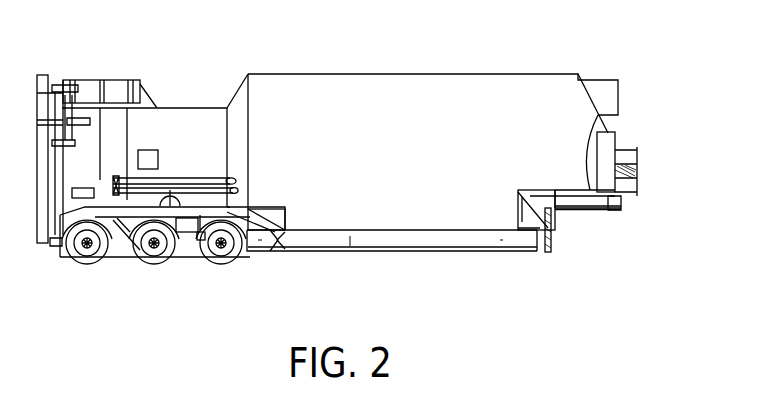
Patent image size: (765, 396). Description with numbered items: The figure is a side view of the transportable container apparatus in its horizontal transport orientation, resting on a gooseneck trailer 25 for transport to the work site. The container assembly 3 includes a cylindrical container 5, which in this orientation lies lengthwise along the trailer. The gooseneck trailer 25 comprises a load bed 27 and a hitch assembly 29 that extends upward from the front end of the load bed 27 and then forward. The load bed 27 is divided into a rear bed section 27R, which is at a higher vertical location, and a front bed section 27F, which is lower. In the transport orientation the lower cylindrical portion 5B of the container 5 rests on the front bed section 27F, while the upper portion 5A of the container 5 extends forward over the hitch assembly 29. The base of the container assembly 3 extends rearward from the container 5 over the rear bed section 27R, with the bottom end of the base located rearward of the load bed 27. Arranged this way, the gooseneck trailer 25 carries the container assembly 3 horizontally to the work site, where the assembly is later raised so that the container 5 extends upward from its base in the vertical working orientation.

The container assembly 3 is at (178, 108).
The container 5 is at (465, 74).
The upper portion of the container 5A is at (573, 197).
The lower cylindrical portion of the container 5B is at (350, 233).
The gooseneck trailer 25 is at (128, 255).
The load bed 27 is at (392, 230).
The front bed section 27F is at (392, 282).
The rear bed section 27R is at (190, 200).
The hitch assembly 29 is at (605, 212).